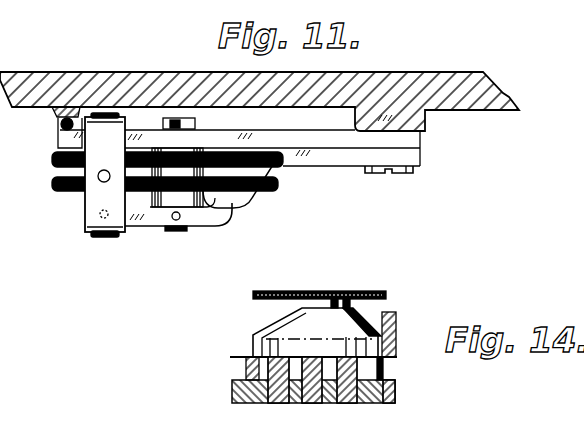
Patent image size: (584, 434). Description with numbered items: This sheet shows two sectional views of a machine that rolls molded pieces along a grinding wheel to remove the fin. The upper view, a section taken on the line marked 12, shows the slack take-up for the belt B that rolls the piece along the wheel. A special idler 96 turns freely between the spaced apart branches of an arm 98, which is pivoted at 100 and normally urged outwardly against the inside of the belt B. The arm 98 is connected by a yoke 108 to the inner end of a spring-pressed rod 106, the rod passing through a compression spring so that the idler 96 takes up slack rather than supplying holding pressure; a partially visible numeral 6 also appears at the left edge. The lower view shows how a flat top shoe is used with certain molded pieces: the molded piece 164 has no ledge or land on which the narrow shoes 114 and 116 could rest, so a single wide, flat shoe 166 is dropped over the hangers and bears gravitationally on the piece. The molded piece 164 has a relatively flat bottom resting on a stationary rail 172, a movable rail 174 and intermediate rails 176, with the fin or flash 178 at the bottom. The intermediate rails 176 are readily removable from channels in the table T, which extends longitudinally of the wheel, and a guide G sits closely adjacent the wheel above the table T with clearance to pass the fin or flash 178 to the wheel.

In FIG. 11, the section line 12- 12 is at (86, 70).
In FIG. 11, the arm 98 is at (241, 122).
In FIG. 11, the pivot 100 is at (393, 174).
In FIG. 11, the belt B is at (285, 166).
In FIG. 14, the belt B is at (253, 430).
In FIG. 11, the idler 96 is at (244, 197).
In FIG. 11, the rod 106 is at (99, 183).
In FIG. 11, the yoke 108 is at (125, 230).
In FIG. 11, the plate portion 6 is at (4, 195).
In FIG. 14, the flat shoe 166 is at (310, 290).
In FIG. 14, the molded piece 164 is at (303, 318).
In FIG. 14, the movable rail 174 is at (248, 357).
In FIG. 14, the intermediate rails 176 is at (323, 403).
In FIG. 14, the fin or flash 178 is at (391, 357).
In FIG. 14, the stationary rail 172 is at (386, 388).
In FIG. 14, the guide G is at (400, 312).
In FIG. 14, the table T is at (348, 403).
In FIG. 14, the shoe 114 is at (227, 430).
In FIG. 14, the shoe 116 is at (394, 430).